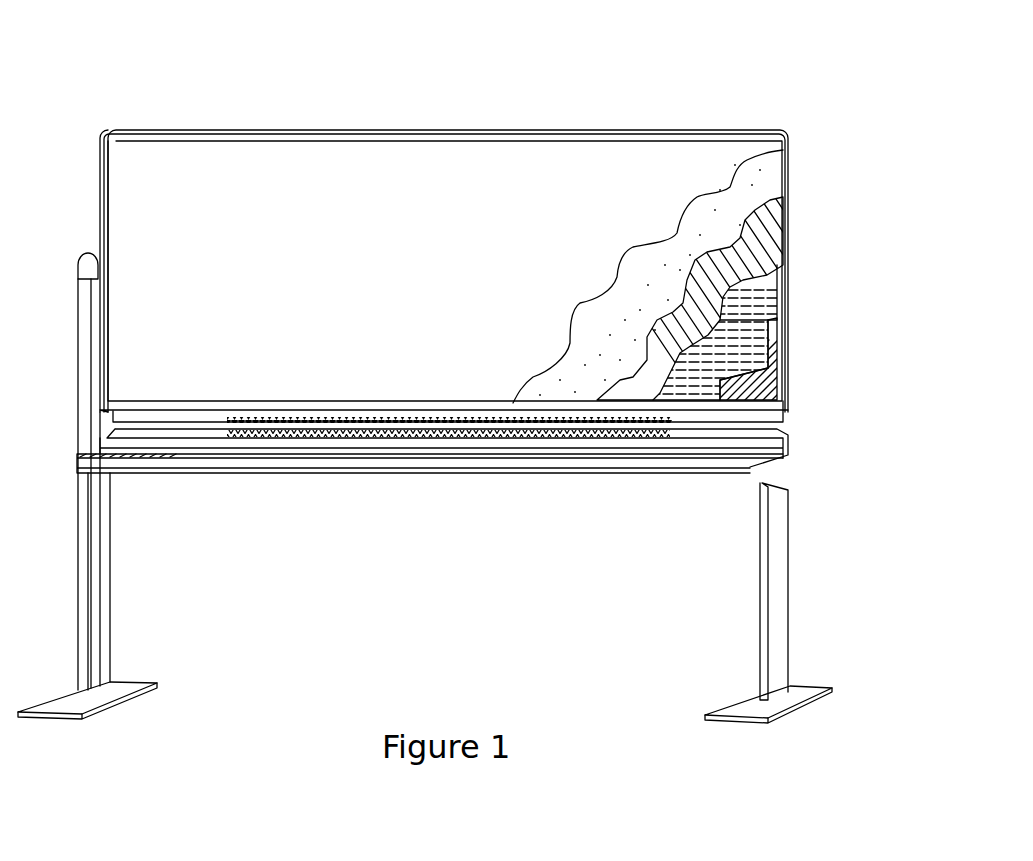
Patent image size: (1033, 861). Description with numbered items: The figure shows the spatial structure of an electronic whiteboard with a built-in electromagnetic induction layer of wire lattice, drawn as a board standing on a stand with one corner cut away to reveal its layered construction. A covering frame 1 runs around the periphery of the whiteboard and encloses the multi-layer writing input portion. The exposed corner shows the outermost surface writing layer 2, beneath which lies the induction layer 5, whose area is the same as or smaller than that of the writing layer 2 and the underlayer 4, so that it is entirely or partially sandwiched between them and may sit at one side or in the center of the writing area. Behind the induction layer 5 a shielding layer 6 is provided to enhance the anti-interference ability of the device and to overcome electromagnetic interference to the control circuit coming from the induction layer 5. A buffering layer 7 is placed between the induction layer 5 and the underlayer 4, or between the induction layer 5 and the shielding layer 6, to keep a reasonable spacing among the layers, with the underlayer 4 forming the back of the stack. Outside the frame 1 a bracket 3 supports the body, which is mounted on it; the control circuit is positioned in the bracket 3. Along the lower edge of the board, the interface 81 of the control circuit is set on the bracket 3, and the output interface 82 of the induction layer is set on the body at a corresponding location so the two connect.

The frame 1 is at (682, 130).
The surface writing layer 2 is at (493, 158).
The bracket 3 is at (783, 603).
The underlayer 4 is at (787, 343).
The induction layer 5 is at (790, 153).
The shielding layer 6 is at (788, 260).
The buffering layer 7 is at (788, 210).
The interface of the control circuit 81 is at (545, 437).
The output interface of the induction layer 82 is at (608, 418).